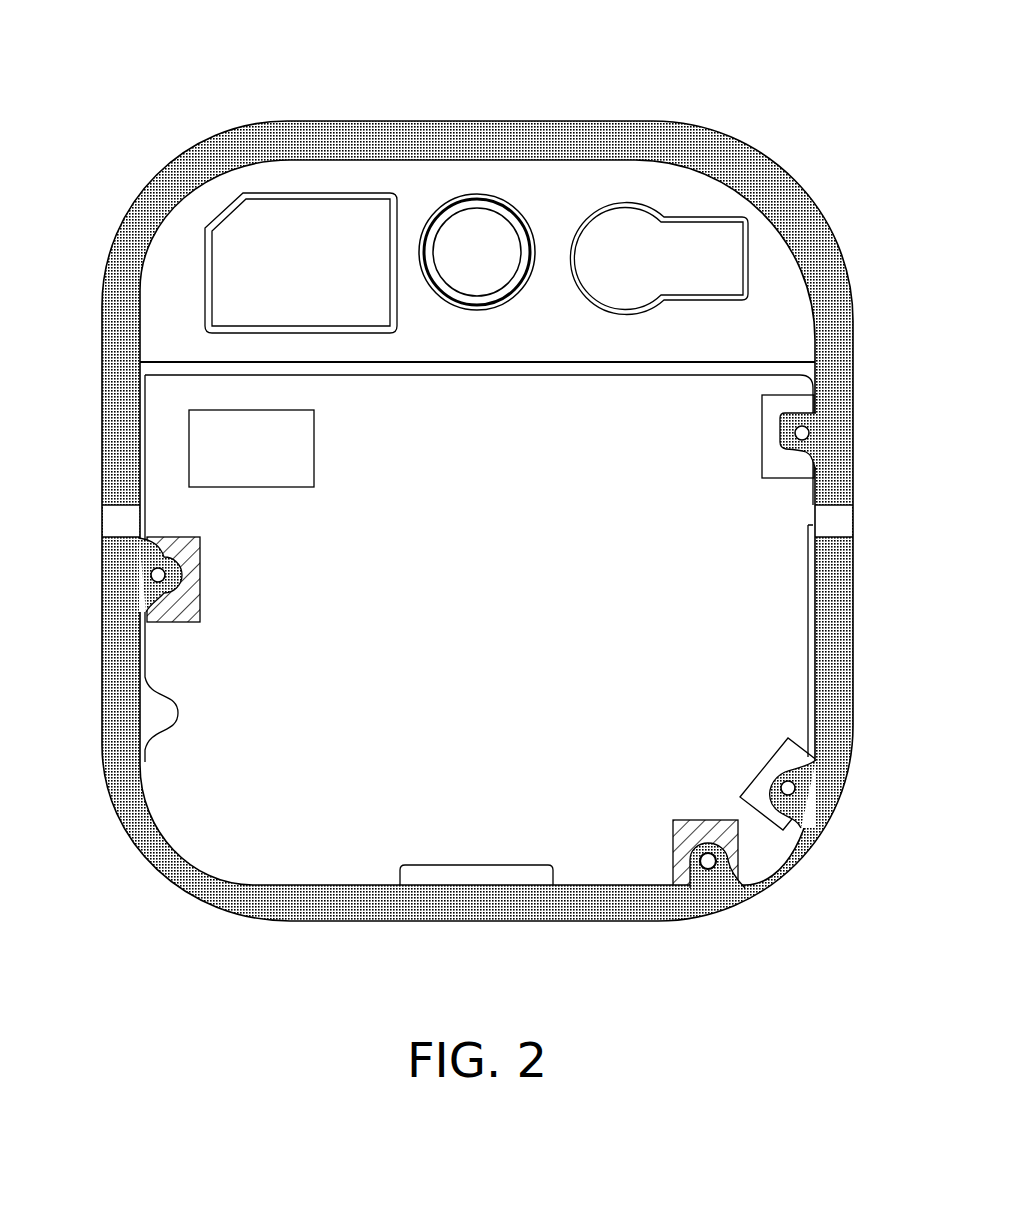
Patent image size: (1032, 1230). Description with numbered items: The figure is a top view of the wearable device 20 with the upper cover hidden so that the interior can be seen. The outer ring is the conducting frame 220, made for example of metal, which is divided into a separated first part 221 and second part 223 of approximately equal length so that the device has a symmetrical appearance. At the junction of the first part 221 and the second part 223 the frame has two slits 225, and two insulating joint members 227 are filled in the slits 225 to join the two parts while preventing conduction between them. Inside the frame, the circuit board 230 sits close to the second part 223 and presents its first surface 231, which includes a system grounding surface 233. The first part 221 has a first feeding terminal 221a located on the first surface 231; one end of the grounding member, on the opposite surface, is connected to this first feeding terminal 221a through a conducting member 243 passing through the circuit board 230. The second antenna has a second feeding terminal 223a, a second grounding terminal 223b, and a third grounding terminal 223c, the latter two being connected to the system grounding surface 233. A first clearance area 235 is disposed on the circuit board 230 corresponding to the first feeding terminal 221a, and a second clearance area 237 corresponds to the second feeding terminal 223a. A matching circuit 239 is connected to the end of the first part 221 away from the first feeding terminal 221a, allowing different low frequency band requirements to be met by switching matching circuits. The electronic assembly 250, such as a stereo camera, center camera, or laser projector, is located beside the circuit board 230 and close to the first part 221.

The wearable device 20 is at (853, 88).
The conducting frame 220 is at (474, 471).
The first part 221 is at (474, 528).
The first feeding terminal 221a is at (858, 428).
The second part 223 is at (195, 883).
The second feeding terminal 223a is at (807, 808).
The second grounding terminal 223b is at (733, 872).
The third grounding terminal 223c is at (150, 576).
The slit 225 is at (477, 527).
The insulating joint member 227 is at (112, 521).
The circuit board 230 is at (302, 853).
The first surface 231 is at (575, 860).
The system grounding surface 233 is at (173, 605).
The first clearance area 235 is at (770, 452).
The second clearance area 237 is at (781, 757).
The matching circuit 239 is at (303, 442).
The conducting member 243 is at (810, 434).
The electronic assembly 250 is at (572, 168).